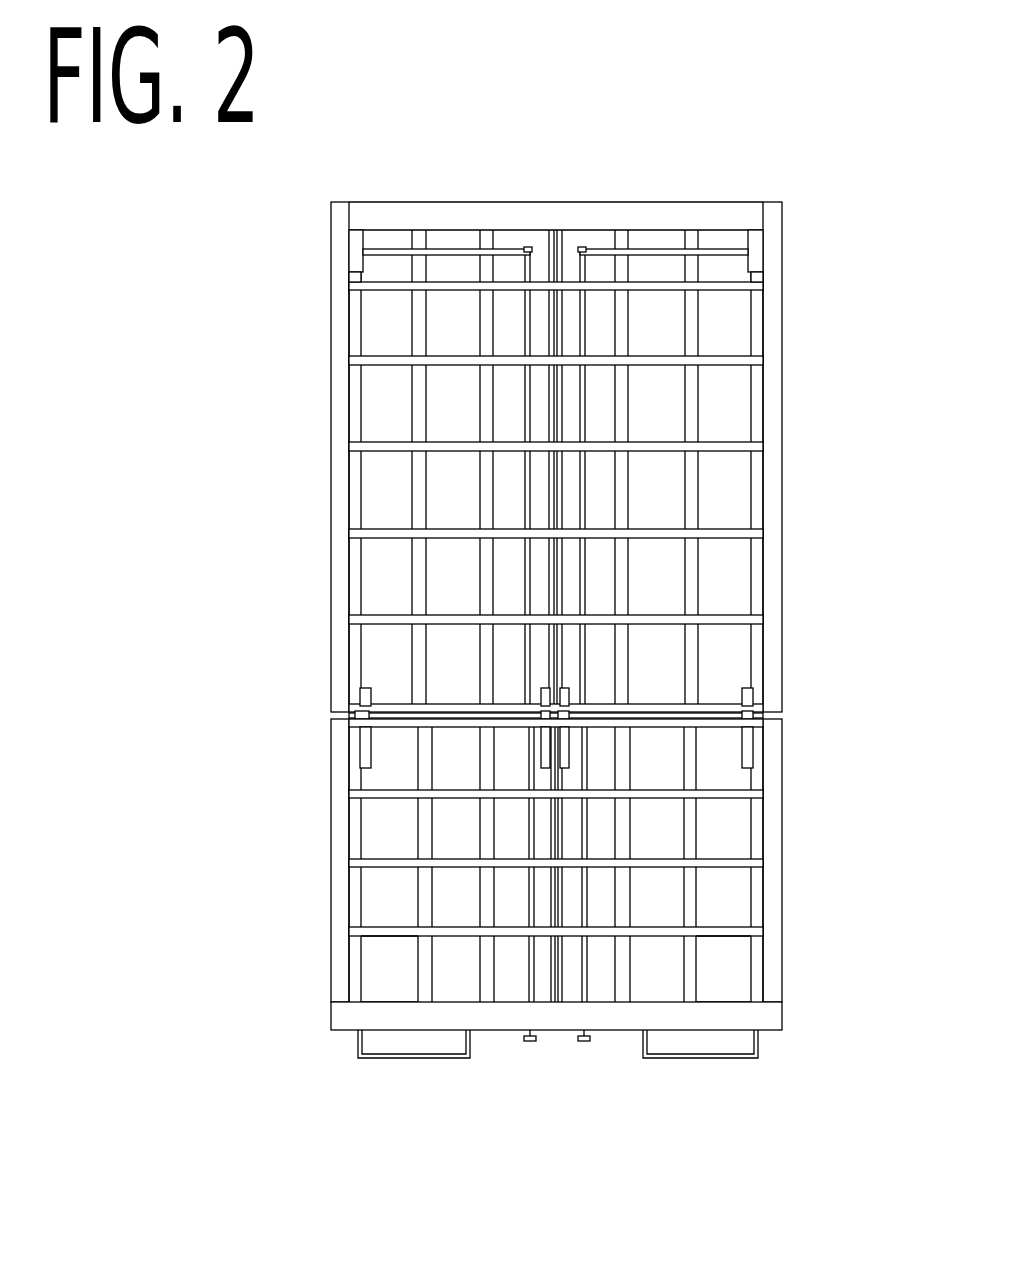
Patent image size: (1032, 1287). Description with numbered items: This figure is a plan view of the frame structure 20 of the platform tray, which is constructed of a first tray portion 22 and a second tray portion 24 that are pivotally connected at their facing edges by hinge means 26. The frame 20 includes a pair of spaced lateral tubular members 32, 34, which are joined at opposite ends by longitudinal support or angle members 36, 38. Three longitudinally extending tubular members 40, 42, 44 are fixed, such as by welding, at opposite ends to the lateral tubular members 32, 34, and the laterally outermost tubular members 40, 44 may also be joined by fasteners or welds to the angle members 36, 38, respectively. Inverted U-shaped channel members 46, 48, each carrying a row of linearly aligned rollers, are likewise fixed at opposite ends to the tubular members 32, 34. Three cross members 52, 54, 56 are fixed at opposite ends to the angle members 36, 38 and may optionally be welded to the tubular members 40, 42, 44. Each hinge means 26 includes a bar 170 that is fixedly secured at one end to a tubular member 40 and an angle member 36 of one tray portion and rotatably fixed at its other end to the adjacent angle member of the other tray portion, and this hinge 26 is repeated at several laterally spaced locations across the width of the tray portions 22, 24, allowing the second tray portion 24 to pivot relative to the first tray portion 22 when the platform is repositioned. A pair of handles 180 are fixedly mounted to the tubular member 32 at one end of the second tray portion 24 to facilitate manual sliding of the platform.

The frame structure 20 is at (903, 528).
The first tray portion 22 is at (784, 442).
The second tray portion 24 is at (783, 910).
The hinge means 26 is at (380, 662).
The lateral tubular member 32 is at (573, 1030).
The lateral tubular member 34 is at (722, 727).
The angle member 36 is at (343, 867).
The angle member 38 is at (775, 978).
The longitudinally extending tubular member 40 is at (355, 742).
The longitudinally extending tubular member 42 is at (553, 250).
The longitudinally extending tubular member 44 is at (760, 840).
The inverted U-shaped channel member 46 is at (430, 977).
The inverted U-shaped channel member 48 is at (690, 988).
The cross member 52 is at (388, 793).
The cross member 54 is at (388, 862).
The cross member 56 is at (402, 930).
The bar 170 is at (545, 697).
The handle 180 is at (430, 1055).